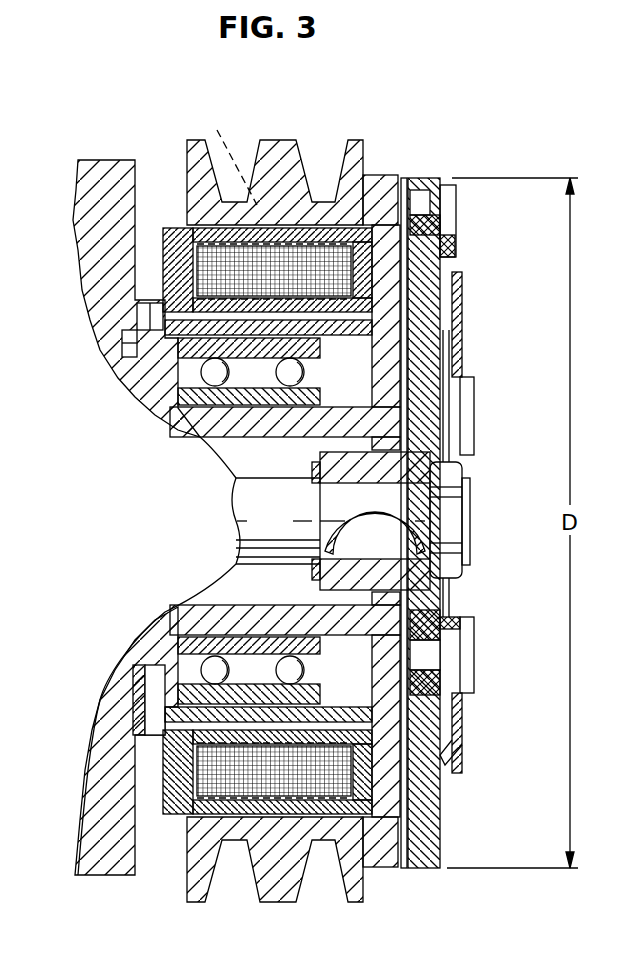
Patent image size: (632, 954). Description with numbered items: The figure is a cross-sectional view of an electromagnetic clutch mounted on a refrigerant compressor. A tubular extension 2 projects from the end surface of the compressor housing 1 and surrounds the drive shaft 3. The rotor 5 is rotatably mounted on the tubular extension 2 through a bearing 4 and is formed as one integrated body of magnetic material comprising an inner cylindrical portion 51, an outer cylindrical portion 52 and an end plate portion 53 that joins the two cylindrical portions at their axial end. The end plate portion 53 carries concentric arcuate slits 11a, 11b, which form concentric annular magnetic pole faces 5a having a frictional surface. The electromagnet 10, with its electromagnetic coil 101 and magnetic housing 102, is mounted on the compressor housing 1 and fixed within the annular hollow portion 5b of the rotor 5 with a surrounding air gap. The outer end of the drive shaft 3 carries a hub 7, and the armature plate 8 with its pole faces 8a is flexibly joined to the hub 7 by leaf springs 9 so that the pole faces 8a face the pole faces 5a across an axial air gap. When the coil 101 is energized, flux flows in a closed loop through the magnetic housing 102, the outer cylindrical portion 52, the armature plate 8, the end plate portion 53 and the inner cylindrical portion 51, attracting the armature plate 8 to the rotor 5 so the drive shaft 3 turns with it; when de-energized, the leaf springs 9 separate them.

The compressor housing 1 is at (97, 183).
The electromagnetic coil 101 is at (196, 268).
The tubular extension 2 is at (213, 456).
The drive shaft 3 is at (280, 531).
The bearing 4 is at (163, 420).
The rotor 5 is at (348, 200).
The magnetic pole faces 5a is at (397, 238).
The annular hollow portion 5b is at (365, 235).
The outer cylindrical portion 52 is at (366, 178).
The end plate portion 53 is at (455, 300).
The hub 7 is at (406, 467).
The armature plate 8 is at (432, 183).
The magnetic pole faces 8a is at (428, 255).
The leaf springs 9 is at (461, 282).
The electromagnet 10 is at (163, 226).
The magnetic housing 102 is at (300, 210).
The arcuate slits 11a is at (412, 226).
The arcuate slits 11b is at (428, 315).
The inner cylindrical portion 51 is at (343, 333).